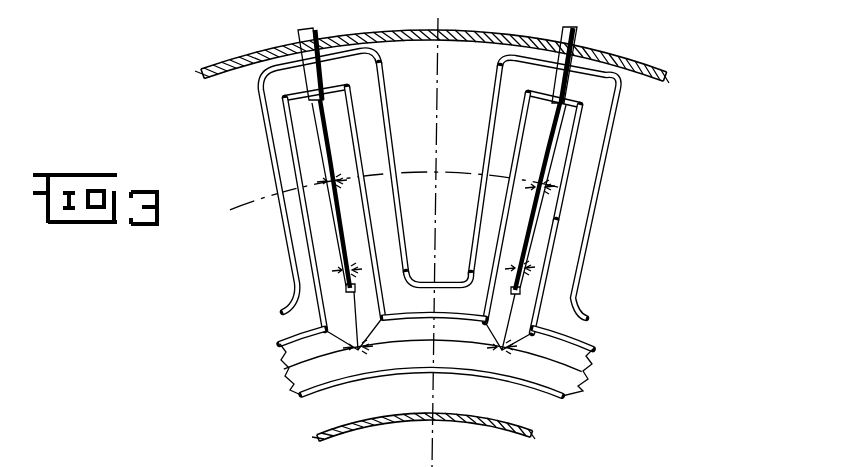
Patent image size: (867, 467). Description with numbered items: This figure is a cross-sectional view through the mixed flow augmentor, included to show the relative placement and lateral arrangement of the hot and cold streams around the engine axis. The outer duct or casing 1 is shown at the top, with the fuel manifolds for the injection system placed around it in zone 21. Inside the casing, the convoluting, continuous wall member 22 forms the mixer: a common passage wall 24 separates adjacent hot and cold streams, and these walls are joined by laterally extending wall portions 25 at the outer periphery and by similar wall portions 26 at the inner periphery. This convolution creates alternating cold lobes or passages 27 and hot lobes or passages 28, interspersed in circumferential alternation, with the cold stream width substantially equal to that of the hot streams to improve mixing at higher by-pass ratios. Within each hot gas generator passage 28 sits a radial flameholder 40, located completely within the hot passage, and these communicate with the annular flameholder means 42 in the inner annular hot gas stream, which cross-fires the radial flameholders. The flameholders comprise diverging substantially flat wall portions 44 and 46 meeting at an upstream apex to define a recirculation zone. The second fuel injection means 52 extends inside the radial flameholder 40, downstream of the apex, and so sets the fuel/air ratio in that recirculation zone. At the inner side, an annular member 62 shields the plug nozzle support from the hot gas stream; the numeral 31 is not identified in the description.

The duct or casing 1 is at (626, 61).
The zone 21 is at (268, 256).
The convoluting continuous wall member 22 is at (634, 167).
The common passage wall 24 is at (572, 236).
The laterally extending wall portions 25 is at (583, 83).
The wall portions 26 is at (444, 290).
The cold lobes or passages 27 is at (427, 219).
The hot lobes or passages 28 is at (588, 142).
The shaft 31 is at (414, 464).
The radial flameholders 40 is at (560, 273).
The annular flameholder means 42 is at (284, 389).
The diverging flat wall portion 44 is at (517, 212).
The diverging flat wall portion 46 is at (540, 186).
The second fuel injection means 52 is at (578, 56).
The annular member 62 is at (519, 431).